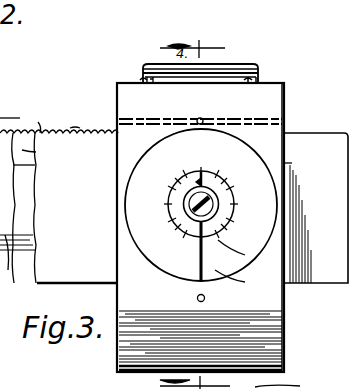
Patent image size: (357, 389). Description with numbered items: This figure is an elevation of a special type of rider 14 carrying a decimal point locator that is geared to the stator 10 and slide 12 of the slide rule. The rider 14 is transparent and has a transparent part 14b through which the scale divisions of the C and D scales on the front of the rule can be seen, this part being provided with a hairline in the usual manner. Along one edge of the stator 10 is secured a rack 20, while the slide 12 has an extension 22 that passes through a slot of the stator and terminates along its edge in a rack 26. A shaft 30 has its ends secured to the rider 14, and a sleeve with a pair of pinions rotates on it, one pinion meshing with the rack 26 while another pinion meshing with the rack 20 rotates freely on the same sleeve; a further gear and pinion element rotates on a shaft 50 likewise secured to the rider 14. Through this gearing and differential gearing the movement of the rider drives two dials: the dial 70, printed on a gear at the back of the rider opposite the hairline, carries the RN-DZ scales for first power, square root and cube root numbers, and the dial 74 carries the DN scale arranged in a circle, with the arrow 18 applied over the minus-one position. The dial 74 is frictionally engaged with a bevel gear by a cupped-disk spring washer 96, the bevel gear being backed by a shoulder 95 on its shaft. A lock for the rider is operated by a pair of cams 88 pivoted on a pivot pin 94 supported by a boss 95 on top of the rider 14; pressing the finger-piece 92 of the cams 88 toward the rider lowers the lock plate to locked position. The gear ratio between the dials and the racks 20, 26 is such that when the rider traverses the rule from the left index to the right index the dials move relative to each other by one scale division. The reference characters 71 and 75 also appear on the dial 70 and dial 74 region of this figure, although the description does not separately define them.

The stator 10 is at (262, 2).
The slide 12 is at (59, 216).
The rider 14 is at (117, 96).
The transparent part 14b is at (36, 119).
The arrow 18 is at (172, 186).
The rack 20 is at (76, 131).
The extension 22 is at (28, 153).
The rack 26 is at (38, 122).
The shaft 30 is at (203, 120).
The shaft 50 is at (205, 296).
The dial 70 is at (160, 264).
The pointer 71 is at (218, 275).
The dial 74 is at (222, 188).
The scale marking 75 is at (218, 242).
The cams 88 is at (255, 80).
The finger-piece 92 is at (152, 76).
The pivot pin 94 is at (142, 80).
The boss 95 is at (215, 80).
The spring washer 96 is at (176, 206).